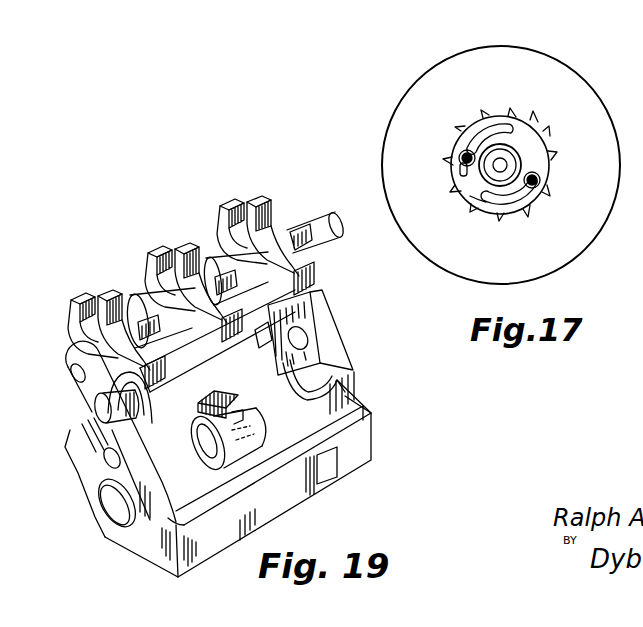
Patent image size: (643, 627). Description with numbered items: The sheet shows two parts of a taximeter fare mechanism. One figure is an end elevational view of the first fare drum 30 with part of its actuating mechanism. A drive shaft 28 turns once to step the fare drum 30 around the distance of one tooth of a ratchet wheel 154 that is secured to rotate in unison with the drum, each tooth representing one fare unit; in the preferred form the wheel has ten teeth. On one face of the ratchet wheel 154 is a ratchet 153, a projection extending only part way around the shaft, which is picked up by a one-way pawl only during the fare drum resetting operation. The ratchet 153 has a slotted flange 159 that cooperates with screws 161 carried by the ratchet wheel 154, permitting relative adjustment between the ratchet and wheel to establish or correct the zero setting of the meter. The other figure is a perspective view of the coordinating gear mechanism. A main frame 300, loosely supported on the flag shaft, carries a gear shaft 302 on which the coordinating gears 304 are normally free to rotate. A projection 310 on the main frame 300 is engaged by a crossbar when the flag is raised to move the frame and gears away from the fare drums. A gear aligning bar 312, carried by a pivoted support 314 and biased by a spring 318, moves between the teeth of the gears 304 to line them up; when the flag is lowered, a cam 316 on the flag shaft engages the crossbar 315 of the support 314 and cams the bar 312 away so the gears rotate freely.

In FIG. 17, the fare drum 30 is at (552, 73).
In FIG. 17, the shaft 28 is at (497, 167).
In FIG. 17, the ratchet 153 is at (522, 155).
In FIG. 17, the ratchet wheel 154 is at (543, 136).
In FIG. 17, the slotted flange 159 is at (477, 198).
In FIG. 17, the screws 161 is at (460, 156).
In FIG. 19, the main frame 300 is at (337, 370).
In FIG. 19, the gear shaft 302 is at (323, 220).
In FIG. 19, the coordinating gears 304 is at (230, 207).
In FIG. 19, the projection 310 is at (72, 464).
In FIG. 19, the gear aligning bar 312 is at (263, 330).
In FIG. 19, the pivoted support 314 is at (318, 300).
In FIG. 19, the crossbar 315 is at (183, 380).
In FIG. 19, the cam 316 is at (240, 403).
In FIG. 19, the spring 318 is at (110, 398).